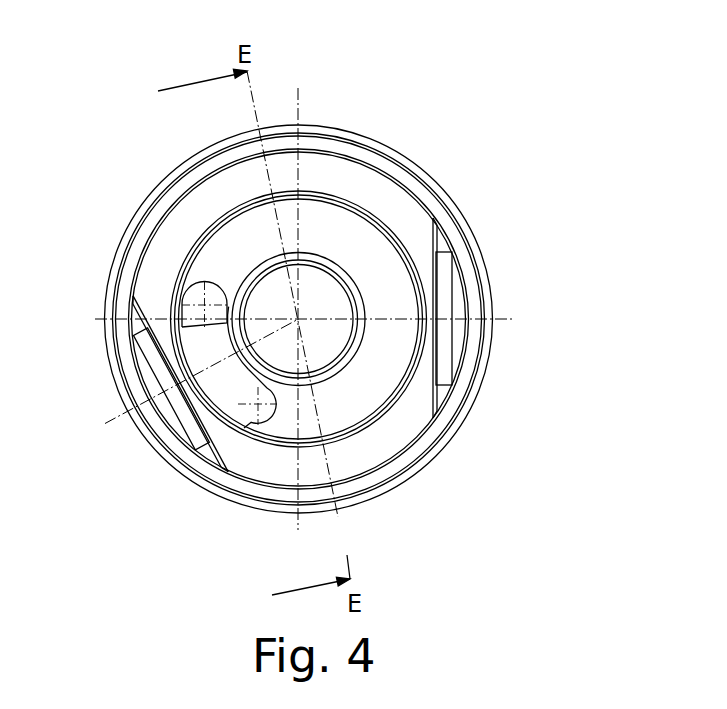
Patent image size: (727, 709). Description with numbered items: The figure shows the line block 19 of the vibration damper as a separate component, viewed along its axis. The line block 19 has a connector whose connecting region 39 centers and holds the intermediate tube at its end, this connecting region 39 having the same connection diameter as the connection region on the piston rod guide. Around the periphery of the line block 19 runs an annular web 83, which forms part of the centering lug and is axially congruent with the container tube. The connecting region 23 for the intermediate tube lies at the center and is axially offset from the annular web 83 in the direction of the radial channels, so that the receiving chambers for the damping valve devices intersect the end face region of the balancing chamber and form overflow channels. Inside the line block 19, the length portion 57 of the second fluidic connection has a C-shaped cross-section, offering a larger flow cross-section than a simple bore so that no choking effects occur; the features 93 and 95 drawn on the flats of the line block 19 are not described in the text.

The line block 19 is at (530, 462).
The connecting region 23 is at (313, 300).
The connecting region 39 is at (395, 240).
The length portion 57 is at (249, 392).
The annular web 83 is at (420, 190).
The flat block 93 is at (443, 298).
The inclined flat block 95 is at (158, 357).